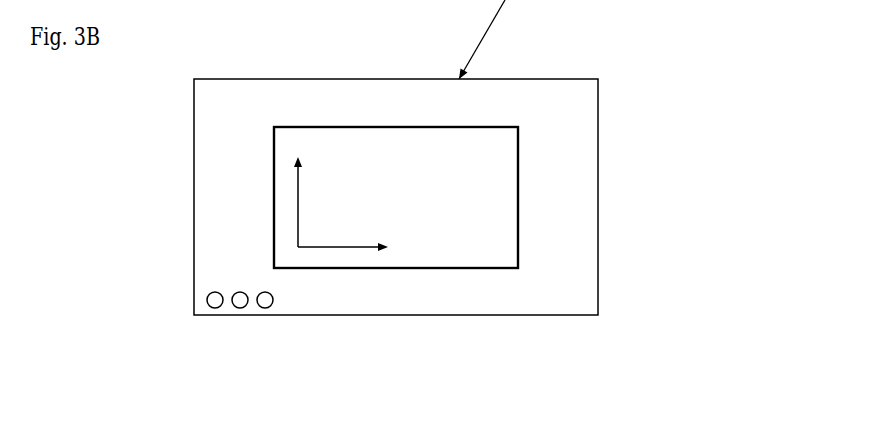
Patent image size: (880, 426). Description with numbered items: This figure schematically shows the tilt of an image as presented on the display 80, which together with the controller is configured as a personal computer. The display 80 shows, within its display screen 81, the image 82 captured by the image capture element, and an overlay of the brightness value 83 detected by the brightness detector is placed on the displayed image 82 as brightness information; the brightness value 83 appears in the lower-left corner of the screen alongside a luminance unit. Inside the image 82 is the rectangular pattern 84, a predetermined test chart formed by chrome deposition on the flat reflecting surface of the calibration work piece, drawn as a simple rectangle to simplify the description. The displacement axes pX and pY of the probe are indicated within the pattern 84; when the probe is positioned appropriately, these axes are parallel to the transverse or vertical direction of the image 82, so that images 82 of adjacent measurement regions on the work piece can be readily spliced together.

The display 80 is at (703, 189).
The display screen 81 is at (598, 242).
The image 82 is at (598, 103).
The brightness value 83 is at (249, 322).
The pattern 84 is at (518, 255).